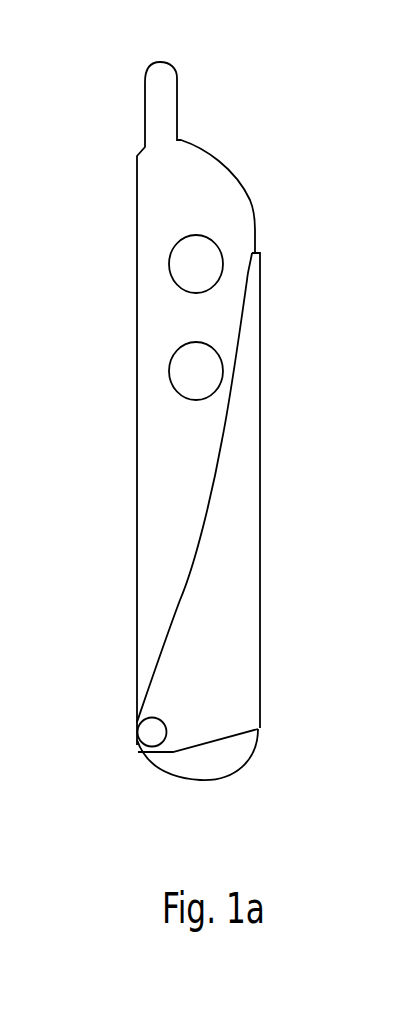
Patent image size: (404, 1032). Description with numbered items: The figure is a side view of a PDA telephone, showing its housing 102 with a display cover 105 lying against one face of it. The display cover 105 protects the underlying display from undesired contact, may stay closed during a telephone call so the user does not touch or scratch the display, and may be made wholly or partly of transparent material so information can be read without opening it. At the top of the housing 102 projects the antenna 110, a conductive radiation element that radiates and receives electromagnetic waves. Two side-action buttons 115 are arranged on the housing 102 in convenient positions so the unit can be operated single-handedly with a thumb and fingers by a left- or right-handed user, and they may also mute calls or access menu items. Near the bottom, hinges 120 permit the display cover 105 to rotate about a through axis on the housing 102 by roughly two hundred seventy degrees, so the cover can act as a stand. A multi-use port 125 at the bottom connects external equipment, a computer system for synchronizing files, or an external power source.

The housing 102 is at (137, 397).
The display cover 105 is at (254, 292).
The antenna 110 is at (173, 80).
The side-action buttons 115 is at (212, 278).
The hinges 120 is at (140, 752).
The multi-use port 125 is at (193, 782).